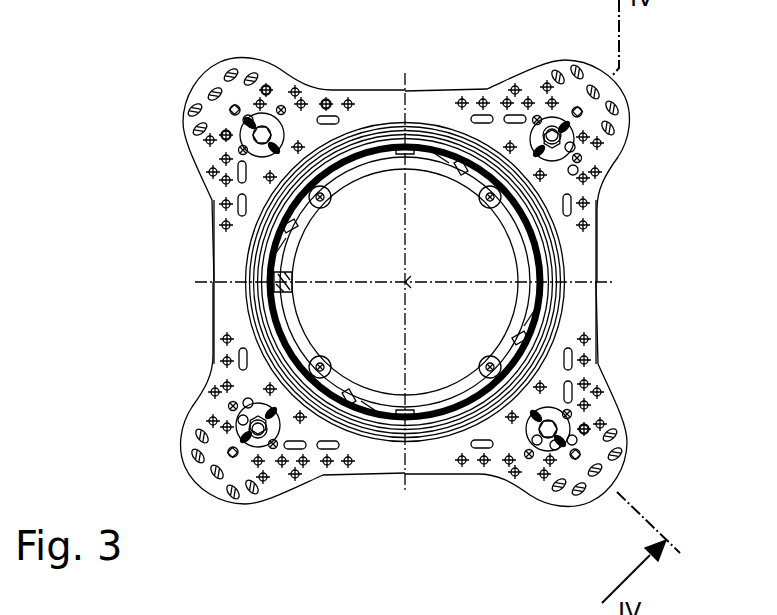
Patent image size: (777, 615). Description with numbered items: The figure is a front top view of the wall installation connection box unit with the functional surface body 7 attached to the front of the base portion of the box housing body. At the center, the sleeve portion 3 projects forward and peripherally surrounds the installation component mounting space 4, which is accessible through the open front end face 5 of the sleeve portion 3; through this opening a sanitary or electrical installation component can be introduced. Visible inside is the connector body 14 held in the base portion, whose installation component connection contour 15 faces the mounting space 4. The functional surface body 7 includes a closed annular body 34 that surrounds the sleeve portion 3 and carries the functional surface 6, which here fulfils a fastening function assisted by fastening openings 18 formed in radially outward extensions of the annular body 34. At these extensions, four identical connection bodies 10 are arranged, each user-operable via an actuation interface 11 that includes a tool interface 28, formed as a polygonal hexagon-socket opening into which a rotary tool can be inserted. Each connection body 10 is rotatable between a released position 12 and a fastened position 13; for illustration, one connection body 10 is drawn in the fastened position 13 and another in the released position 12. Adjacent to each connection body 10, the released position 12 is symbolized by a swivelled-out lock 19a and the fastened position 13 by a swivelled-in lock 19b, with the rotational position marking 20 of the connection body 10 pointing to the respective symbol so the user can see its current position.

The sleeve portion 3 is at (575, 323).
The installation component mounting space 4 is at (500, 257).
The open front end face 5 is at (422, 413).
The functional surface 6 is at (285, 473).
The functional surface body 7 is at (600, 303).
The connection body 10 is at (657, 420).
The actuation interface 11 is at (340, 299).
The released position 12 is at (225, 134).
The fastened position 13 is at (565, 123).
The connector body 14 is at (428, 153).
The installation component connection contour 15 is at (377, 153).
The fastening openings 18 is at (328, 101).
The swivelled-out lock 19a is at (236, 108).
The swivelled-in lock 19b is at (572, 168).
The rotational position marking 20 is at (246, 118).
The tool interface 28 is at (553, 123).
The annular body 34 is at (230, 298).